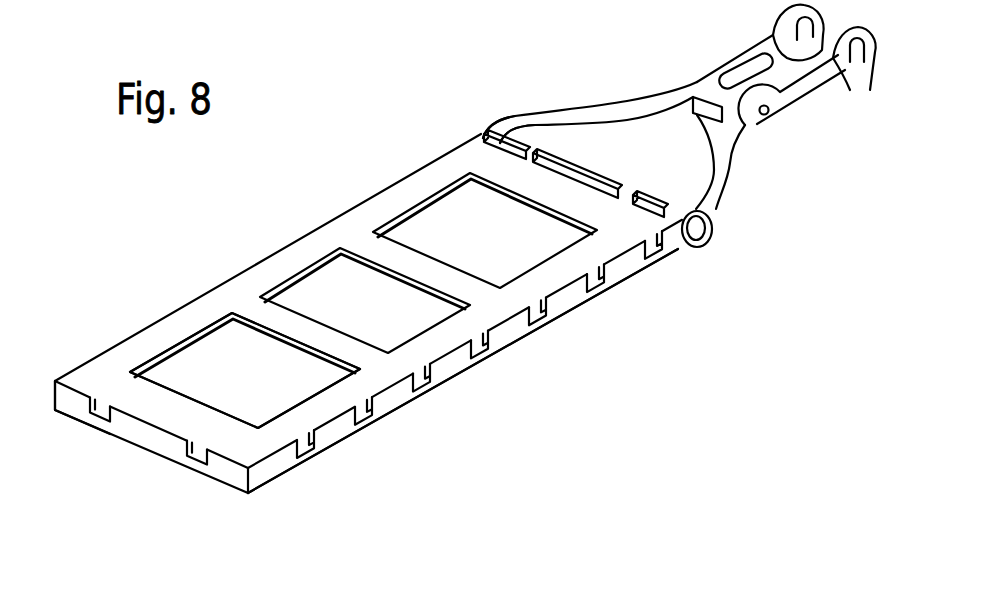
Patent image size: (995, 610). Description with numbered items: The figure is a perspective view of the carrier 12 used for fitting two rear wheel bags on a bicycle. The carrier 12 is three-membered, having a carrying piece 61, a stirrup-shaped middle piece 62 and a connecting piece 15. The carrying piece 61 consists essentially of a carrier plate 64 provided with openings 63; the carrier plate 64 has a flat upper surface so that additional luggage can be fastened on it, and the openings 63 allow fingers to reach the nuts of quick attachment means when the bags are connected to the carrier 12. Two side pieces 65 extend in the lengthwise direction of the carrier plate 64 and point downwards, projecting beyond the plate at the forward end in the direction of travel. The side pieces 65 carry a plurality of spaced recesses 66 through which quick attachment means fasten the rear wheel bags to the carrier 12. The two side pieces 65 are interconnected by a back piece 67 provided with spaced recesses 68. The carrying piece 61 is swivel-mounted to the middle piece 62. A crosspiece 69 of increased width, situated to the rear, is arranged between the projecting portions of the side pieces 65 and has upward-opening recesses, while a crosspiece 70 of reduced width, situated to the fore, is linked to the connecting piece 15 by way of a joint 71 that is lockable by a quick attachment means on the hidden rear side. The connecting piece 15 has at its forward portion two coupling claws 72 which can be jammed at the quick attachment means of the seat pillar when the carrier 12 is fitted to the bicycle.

The carrier 12 is at (463, 249).
The connecting piece 15 is at (733, 85).
The carrying piece 61 is at (366, 303).
The middle piece 62 is at (614, 137).
The openings 63 is at (363, 300).
The carrier plate 64 is at (238, 345).
The side pieces 65 is at (463, 371).
The recesses 66 is at (479, 362).
The back piece 67 is at (80, 379).
The recesses 68 is at (427, 269).
The crosspiece 69 is at (576, 173).
The crosspiece 70 is at (683, 64).
The joint 71 is at (791, 136).
The coupling claws 72 is at (824, 65).